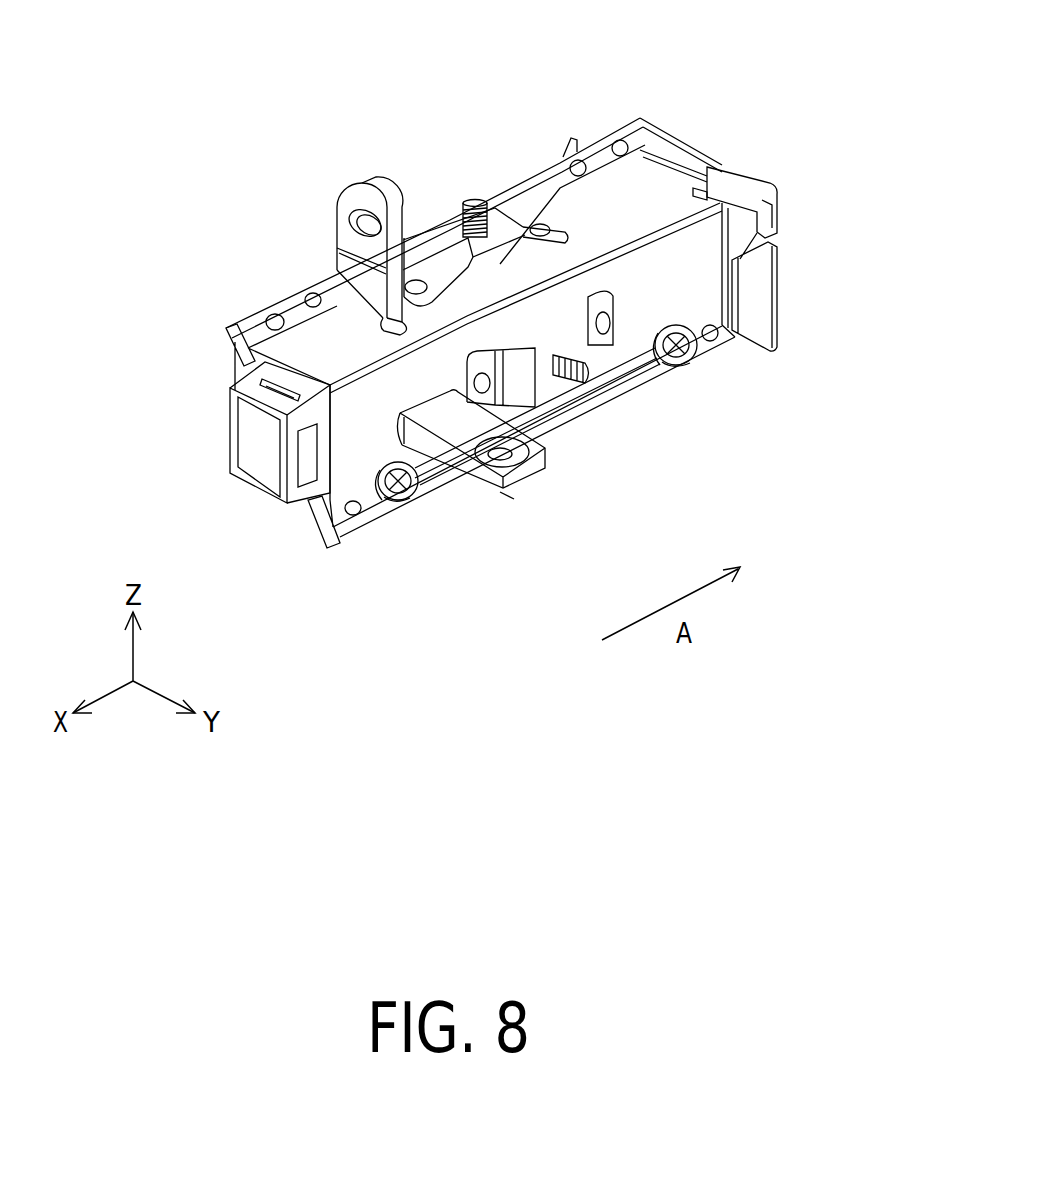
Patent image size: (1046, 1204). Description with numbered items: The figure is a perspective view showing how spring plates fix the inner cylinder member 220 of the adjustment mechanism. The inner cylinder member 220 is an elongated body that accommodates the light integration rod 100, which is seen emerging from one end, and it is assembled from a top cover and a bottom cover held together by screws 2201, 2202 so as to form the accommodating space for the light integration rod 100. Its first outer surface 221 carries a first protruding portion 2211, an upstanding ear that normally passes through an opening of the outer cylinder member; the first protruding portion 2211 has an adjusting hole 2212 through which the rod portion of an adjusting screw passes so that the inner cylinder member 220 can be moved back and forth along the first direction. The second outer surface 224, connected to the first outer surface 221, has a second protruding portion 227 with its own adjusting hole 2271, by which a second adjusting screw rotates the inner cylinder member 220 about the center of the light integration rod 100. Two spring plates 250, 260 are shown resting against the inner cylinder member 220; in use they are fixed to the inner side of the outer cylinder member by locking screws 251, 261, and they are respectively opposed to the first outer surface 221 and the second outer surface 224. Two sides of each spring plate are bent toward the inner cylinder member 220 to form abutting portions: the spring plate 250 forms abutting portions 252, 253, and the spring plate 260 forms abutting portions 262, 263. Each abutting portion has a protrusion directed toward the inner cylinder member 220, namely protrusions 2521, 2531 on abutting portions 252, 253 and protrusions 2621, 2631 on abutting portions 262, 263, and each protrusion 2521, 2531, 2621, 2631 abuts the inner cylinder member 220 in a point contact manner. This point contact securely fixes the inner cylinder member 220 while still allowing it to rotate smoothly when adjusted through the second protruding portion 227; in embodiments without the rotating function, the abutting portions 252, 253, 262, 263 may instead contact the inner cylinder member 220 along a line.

The light integration rod 100 is at (263, 473).
The inner cylinder member 220 is at (672, 183).
The first outer surface 221 is at (630, 170).
The first protruding portion 2211 is at (355, 198).
The adjusting hole 2212 is at (347, 230).
The second outer surface 224 is at (716, 283).
The second protruding portion 227 is at (437, 492).
The adjusting hole 2271 is at (511, 494).
The screw 2201 is at (402, 514).
The screw 2202 is at (710, 353).
The spring plate 250 is at (472, 164).
The locking screw 251 is at (465, 200).
The abutting portion 252 is at (502, 210).
The protrusion 2521 is at (540, 226).
The abutting portion 253 is at (433, 250).
The protrusion 2531 is at (416, 280).
The spring plate 260 is at (579, 412).
The locking screw 261 is at (616, 350).
The abutting portion 262 is at (594, 348).
The protrusion 2621 is at (607, 328).
The abutting portion 263 is at (522, 400).
The protrusion 2631 is at (505, 452).